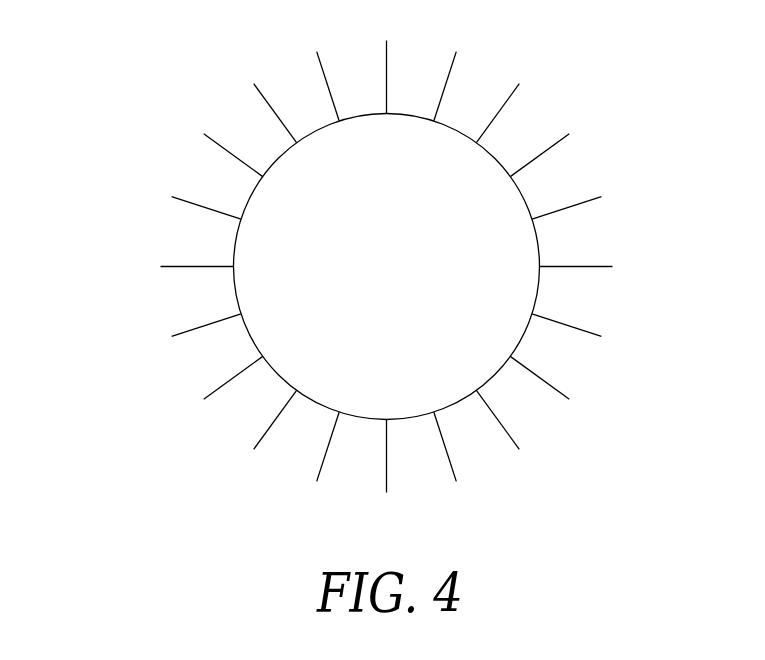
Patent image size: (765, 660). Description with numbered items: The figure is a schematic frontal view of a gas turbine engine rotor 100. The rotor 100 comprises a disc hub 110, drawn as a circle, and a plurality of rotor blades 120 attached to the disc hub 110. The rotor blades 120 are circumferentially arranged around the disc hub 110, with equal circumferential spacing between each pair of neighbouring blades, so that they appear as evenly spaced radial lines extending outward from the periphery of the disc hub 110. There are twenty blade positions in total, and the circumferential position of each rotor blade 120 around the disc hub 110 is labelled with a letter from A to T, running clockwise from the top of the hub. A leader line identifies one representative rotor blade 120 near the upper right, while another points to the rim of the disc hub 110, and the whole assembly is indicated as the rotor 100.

The gas turbine engine rotor 100 is at (375, 253).
The disc hub 110 is at (540, 250).
The rotor blades 120 is at (549, 143).